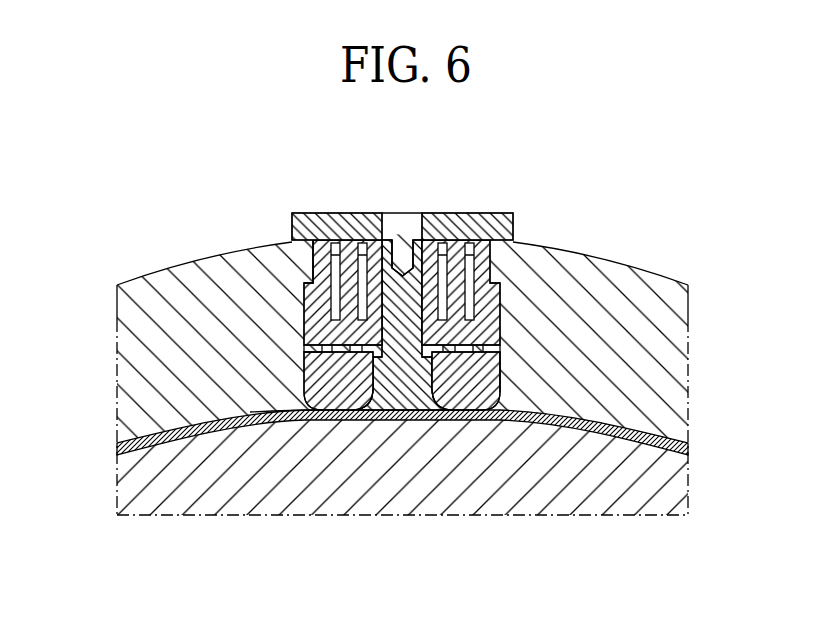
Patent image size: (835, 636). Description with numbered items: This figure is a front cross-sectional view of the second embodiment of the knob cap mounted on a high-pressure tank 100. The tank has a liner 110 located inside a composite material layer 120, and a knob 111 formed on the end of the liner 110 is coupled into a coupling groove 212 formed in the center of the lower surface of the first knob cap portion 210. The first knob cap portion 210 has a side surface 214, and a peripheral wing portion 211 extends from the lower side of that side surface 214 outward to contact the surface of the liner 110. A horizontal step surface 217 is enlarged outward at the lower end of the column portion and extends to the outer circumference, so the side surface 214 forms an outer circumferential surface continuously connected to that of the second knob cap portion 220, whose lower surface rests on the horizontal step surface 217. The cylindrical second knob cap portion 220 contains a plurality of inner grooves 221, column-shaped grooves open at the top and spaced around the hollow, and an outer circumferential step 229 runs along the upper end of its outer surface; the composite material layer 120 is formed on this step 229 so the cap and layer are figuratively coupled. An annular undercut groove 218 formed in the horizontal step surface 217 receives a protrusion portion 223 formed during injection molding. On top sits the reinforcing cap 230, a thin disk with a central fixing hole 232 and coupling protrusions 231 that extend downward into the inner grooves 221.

The high-pressure tank 100 is at (236, 496).
The liner 110 is at (181, 430).
The knob 111 is at (402, 402).
The composite material layer 120 is at (640, 292).
The first knob cap portion 210 is at (467, 404).
The peripheral wing portion 211 is at (290, 408).
The coupling groove 212 is at (355, 406).
The side surface 214 is at (304, 365).
The horizontal step surface 217 is at (304, 350).
The annular undercut groove 218 is at (500, 390).
The second knob cap portion 220 is at (492, 301).
The inner grooves 221 is at (490, 277).
The protrusion portion 223 is at (500, 366).
The outer circumferential step 229 is at (313, 270).
The reinforcing cap 230 is at (323, 207).
The coupling protrusions 231 is at (473, 245).
The fixing hole 232 is at (398, 232).